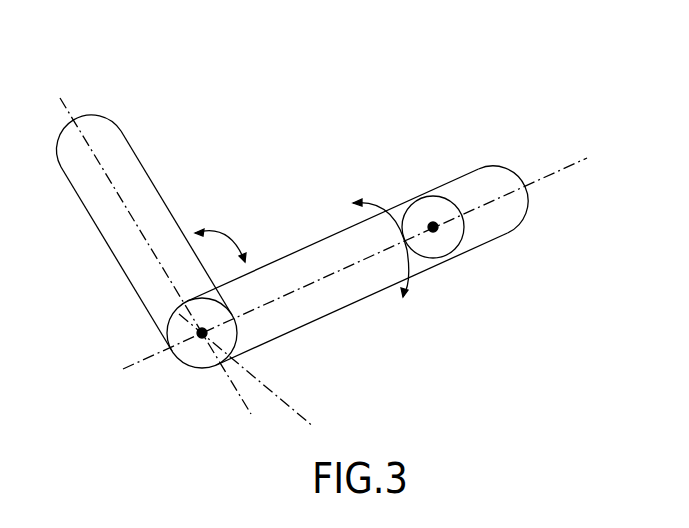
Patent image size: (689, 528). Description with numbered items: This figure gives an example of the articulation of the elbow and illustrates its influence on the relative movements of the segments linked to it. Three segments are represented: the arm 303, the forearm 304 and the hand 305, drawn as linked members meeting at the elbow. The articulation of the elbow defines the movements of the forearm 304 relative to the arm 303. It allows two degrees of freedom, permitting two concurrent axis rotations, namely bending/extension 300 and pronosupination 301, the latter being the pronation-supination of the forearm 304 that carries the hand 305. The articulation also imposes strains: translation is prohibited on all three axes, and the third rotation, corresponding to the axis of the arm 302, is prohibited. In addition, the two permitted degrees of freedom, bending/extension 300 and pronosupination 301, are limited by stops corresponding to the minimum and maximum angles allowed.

The bending/extension 300 is at (297, 418).
The pronosupination 301 is at (547, 180).
The axis of the arm 302 is at (70, 112).
The arm 303 is at (150, 178).
The forearm 304 is at (292, 251).
The hand 305 is at (480, 164).